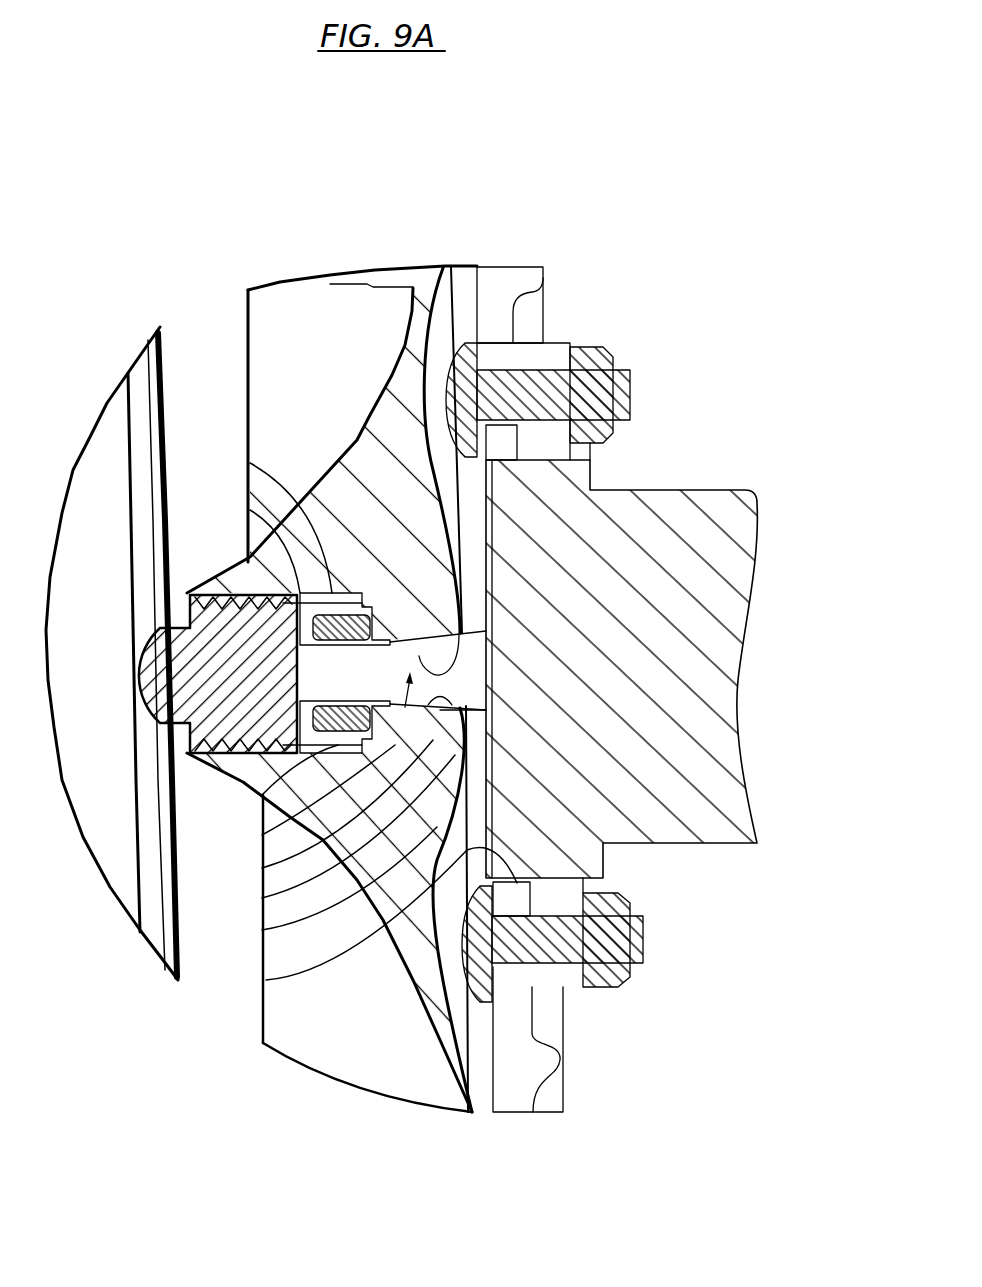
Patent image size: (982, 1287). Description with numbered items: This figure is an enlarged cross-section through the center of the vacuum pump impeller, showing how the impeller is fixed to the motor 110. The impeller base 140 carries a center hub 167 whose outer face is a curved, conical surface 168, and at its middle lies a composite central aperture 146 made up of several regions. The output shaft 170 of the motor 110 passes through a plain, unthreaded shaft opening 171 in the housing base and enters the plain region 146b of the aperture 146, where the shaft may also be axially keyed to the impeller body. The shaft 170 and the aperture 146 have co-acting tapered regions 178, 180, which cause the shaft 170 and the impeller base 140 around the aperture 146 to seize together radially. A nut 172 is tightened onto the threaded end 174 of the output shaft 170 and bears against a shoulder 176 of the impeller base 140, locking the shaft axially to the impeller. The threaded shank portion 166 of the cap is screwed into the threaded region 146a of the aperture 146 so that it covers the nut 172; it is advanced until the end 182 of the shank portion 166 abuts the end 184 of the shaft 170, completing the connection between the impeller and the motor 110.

The motor 110 is at (695, 489).
The impeller base 140 is at (262, 930).
The composite central aperture 146 is at (443, 605).
The threaded region 146a is at (243, 758).
The plain region 146b is at (262, 898).
The threaded shank portion 166 is at (232, 593).
The center hub 167 is at (310, 481).
The curved conical surface 168 is at (392, 375).
The output shaft 170 is at (262, 868).
The shaft opening 171 is at (266, 980).
The nut 172 is at (251, 464).
The threaded end 174 is at (251, 509).
The shoulder 176 is at (262, 835).
The tapered region 178 is at (421, 655).
The tapered region 180 is at (453, 707).
The end of shank portion 182 is at (300, 686).
The end of shaft 184 is at (305, 672).